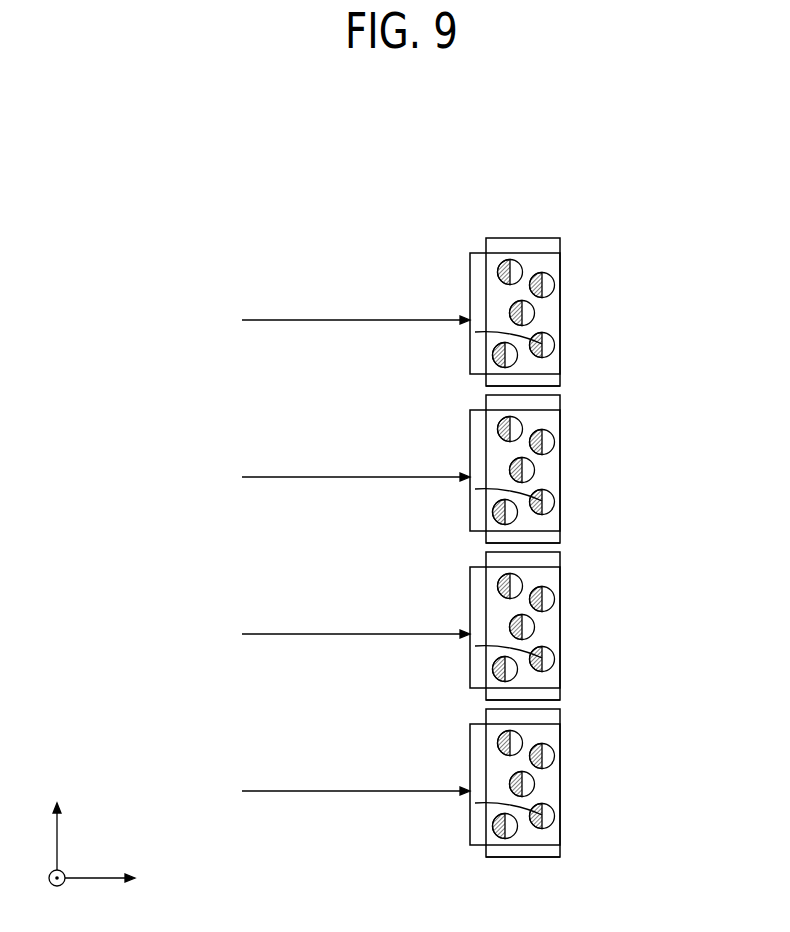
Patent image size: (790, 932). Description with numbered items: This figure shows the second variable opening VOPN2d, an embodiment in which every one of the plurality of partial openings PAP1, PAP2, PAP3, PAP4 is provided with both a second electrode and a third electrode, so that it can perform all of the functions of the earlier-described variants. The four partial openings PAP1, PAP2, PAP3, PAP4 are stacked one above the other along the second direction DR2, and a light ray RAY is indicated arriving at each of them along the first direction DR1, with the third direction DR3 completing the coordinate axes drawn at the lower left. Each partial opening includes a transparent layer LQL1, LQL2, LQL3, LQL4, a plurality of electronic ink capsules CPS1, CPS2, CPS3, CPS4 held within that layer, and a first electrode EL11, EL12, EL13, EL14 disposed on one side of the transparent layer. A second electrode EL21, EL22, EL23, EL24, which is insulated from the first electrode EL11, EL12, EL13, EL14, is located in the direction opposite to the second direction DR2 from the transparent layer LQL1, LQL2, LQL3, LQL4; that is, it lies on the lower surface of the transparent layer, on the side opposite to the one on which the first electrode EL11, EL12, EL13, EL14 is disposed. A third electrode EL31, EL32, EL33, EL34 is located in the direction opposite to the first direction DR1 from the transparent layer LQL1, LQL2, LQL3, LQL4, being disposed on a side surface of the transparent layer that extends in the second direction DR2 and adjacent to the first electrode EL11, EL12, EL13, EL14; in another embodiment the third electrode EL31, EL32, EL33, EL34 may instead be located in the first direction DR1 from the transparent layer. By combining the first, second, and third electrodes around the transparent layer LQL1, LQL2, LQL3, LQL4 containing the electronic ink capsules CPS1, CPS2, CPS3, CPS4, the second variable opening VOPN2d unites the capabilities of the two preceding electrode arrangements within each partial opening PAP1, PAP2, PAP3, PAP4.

The second variable opening VOPN2d is at (572, 168).
The light ray RAY is at (311, 555).
The partial opening PAP1 is at (640, 237).
The partial opening PAP2 is at (640, 394).
The partial opening PAP3 is at (640, 551).
The partial opening PAP4 is at (640, 708).
The first electrode EL11 is at (555, 243).
The first electrode EL12 is at (555, 400).
The first electrode EL13 is at (555, 557).
The first electrode EL14 is at (555, 714).
The second electrode EL21 is at (557, 382).
The second electrode EL22 is at (557, 539).
The second electrode EL23 is at (557, 696).
The second electrode EL24 is at (557, 853).
The third electrode EL31 is at (542, 344).
The third electrode EL32 is at (542, 501).
The third electrode EL33 is at (542, 658).
The third electrode EL34 is at (542, 815).
The transparent layer LQL1 is at (560, 317).
The transparent layer LQL2 is at (560, 474).
The transparent layer LQL3 is at (560, 631).
The transparent layer LQL4 is at (560, 788).
The electronic ink capsules CPS1 is at (560, 283).
The electronic ink capsules CPS2 is at (560, 440).
The electronic ink capsules CPS3 is at (560, 597).
The electronic ink capsules CPS4 is at (560, 754).
The first direction DR1 is at (120, 880).
The second direction DR2 is at (58, 821).
The third direction DR3 is at (58, 896).